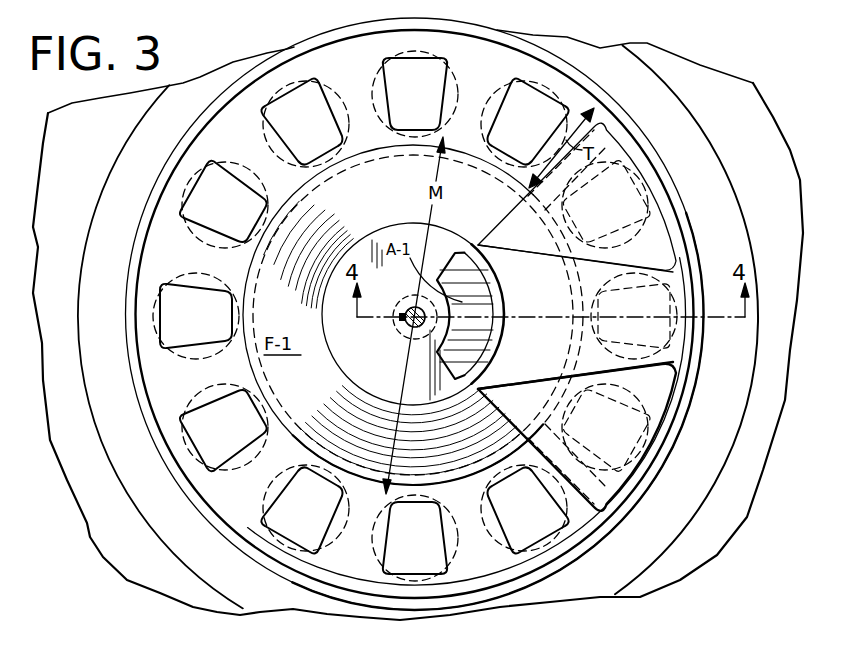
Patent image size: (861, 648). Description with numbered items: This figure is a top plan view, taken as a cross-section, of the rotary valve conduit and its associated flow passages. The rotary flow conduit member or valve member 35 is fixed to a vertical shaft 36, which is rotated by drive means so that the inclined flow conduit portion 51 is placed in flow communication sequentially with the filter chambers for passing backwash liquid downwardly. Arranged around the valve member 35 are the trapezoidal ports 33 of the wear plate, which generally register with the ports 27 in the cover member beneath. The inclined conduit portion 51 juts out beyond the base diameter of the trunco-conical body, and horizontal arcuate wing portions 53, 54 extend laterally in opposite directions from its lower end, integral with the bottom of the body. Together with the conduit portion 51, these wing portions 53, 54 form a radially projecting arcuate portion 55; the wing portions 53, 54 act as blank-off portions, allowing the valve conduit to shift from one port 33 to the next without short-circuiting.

The ports 27 is at (459, 95).
The ports 33 is at (385, 102).
The valve member 35 is at (183, 389).
The vertical shaft 36 is at (410, 328).
The inclined flow conduit portion 51 is at (541, 342).
The wing portion 53 is at (628, 436).
The wing portion 54 is at (630, 193).
The radially projecting arcuate portion 55 is at (617, 118).